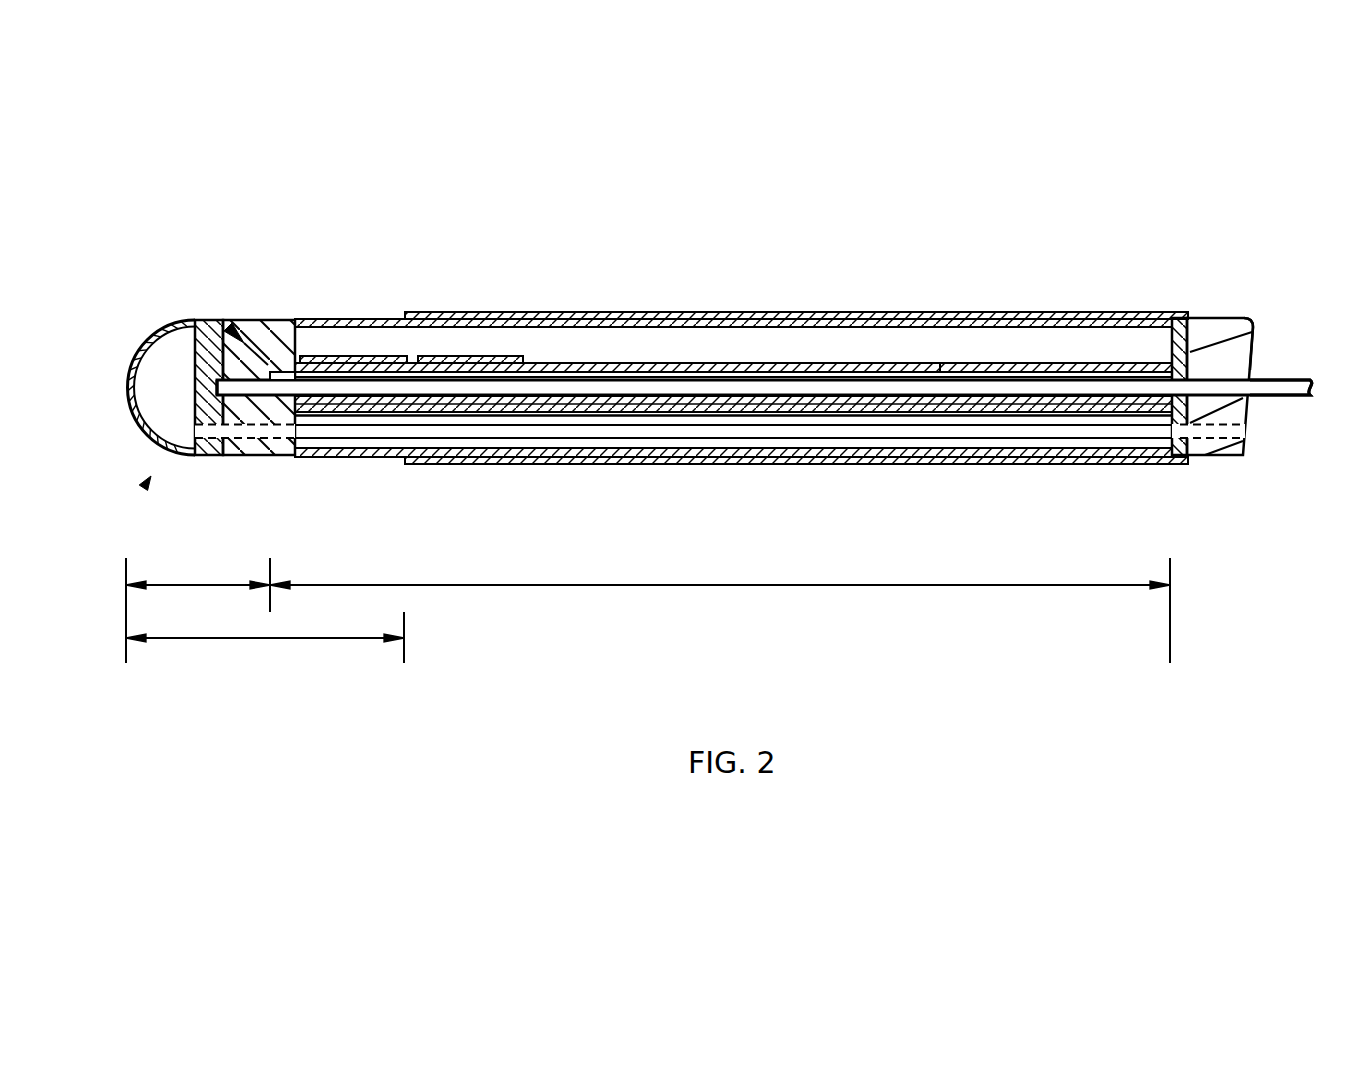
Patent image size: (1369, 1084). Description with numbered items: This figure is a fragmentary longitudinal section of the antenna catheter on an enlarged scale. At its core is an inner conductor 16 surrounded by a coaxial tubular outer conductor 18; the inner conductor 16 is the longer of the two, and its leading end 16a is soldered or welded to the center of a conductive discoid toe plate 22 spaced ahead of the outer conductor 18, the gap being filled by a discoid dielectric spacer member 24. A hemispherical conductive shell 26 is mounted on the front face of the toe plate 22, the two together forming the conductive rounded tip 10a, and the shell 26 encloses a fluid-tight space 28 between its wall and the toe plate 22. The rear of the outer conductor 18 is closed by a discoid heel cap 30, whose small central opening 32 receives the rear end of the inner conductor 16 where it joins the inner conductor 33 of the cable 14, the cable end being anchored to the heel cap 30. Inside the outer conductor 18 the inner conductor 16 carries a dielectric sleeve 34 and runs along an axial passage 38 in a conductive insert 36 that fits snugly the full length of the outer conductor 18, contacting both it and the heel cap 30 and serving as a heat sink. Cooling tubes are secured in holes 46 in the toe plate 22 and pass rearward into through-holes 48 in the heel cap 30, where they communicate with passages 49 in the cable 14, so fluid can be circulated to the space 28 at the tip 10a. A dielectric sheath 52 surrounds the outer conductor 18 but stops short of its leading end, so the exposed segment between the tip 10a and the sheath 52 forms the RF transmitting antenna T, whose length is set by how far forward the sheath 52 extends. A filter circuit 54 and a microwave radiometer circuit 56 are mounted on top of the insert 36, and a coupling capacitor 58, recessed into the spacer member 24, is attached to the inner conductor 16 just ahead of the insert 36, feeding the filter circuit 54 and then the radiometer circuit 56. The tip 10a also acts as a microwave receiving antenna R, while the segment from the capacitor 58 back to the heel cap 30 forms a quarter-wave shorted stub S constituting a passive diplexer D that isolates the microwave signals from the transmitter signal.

The conductive leading end or tip 10a is at (146, 481).
The cable 14 is at (1253, 352).
The inner conductor 16 is at (352, 387).
The front or leading end of inner conductor 16a is at (215, 388).
The outer conductor 18 is at (333, 320).
The toe plate 22 is at (184, 320).
The dielectric spacer member 24 is at (257, 456).
The hemispherical conductive shell 26 is at (148, 341).
The fluid-tight space 28 is at (158, 372).
The heel cap 30 is at (1192, 356).
The opening 32 is at (1165, 358).
The inner conductor of cable 33 is at (1313, 397).
The dielectric sleeve 34 is at (1005, 364).
The conductive insert 36 is at (885, 364).
The axial passage 38 is at (830, 377).
The holes 46 is at (220, 426).
The through-holes 48 is at (1187, 433).
The passages 49 is at (1248, 440).
The sheath 52 is at (615, 313).
The filter circuit 54 is at (385, 357).
The microwave radiometer circuit 56 is at (497, 357).
The coupling capacitor 58 is at (271, 372).
The passive diplexer D is at (224, 322).
The microwave receiving antenna R is at (198, 610).
The quarter wave stub S is at (720, 610).
The RF heating or transmitting antenna T is at (265, 640).